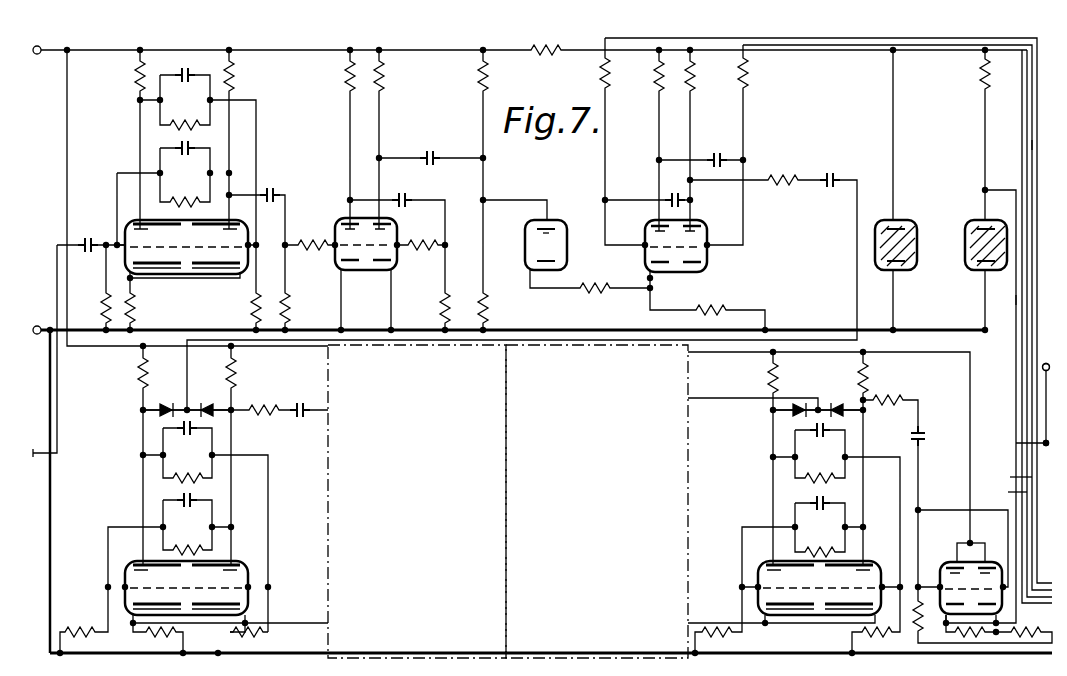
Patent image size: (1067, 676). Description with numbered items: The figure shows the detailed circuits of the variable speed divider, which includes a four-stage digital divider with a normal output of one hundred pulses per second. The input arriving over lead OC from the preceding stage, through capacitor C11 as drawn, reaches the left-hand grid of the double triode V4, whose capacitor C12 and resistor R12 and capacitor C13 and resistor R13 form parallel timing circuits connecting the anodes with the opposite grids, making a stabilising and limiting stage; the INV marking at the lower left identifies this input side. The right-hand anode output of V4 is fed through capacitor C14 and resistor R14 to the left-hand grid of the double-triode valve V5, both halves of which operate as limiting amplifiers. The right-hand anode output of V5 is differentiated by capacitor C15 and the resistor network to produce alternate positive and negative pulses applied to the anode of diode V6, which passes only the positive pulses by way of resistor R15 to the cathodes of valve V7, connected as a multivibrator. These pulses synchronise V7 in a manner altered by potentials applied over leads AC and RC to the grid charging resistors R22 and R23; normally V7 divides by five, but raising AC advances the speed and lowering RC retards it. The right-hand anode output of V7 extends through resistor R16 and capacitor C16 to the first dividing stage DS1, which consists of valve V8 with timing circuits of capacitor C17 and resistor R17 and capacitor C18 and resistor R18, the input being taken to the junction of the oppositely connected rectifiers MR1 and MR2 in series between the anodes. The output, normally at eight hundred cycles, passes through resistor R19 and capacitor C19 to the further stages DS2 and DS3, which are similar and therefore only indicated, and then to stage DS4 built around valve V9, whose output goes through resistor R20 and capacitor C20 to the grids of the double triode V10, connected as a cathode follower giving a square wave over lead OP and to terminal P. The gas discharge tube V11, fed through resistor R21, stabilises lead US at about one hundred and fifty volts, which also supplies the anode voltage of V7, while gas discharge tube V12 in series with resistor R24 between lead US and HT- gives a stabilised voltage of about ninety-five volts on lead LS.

The negative high-tension supply HT- is at (37, 318).
The lead OC is at (33, 446).
The inverter input INV is at (28, 636).
The coupling capacitor C11 is at (90, 232).
The capacitor C12 is at (202, 69).
The resistor R12 is at (188, 115).
The capacitor C13 is at (203, 142).
The resistor R13 is at (188, 187).
The capacitor C14 is at (278, 183).
The double triode valve V4 is at (186, 239).
The resistor R14 is at (314, 232).
The double-triode valve V5 is at (341, 219).
The capacitor C15 is at (432, 147).
The diode V6 is at (554, 233).
The resistor R21 is at (547, 63).
The resistor R15 is at (592, 303).
The grid charging resistor R22 is at (624, 73).
The grid charging resistor R23 is at (763, 73).
The valve V7 is at (683, 236).
The resistor R16 is at (781, 167).
The capacitor C16 is at (834, 166).
The gas discharge tube V11 is at (890, 234).
The gas discharge tube V12 is at (983, 234).
The resistor R24 is at (967, 85).
The lead AC is at (948, 44).
The lead RC is at (983, 50).
The lead US is at (1037, 144).
The lead LS is at (1017, 304).
The terminal P is at (1045, 355).
The lead OP is at (1051, 457).
The first frequency dividing stage DS1 is at (154, 399).
The rectifier MR1 is at (167, 400).
The rectifier MR2 is at (209, 400).
The resistor R19 is at (264, 395).
The capacitor C19 is at (305, 396).
The capacitor C17 is at (184, 440).
The resistor R17 is at (187, 471).
The capacitor C18 is at (184, 512).
The resistor R18 is at (187, 543).
The valve V8 is at (194, 577).
The dividing stage DS2 is at (417, 501).
The dividing stage DS3 is at (597, 501).
The further dividing stage DS4 is at (847, 393).
The resistor R20 is at (889, 412).
The capacitor C20 is at (940, 437).
The valve V9 is at (826, 576).
The double triode valve V10 is at (967, 568).